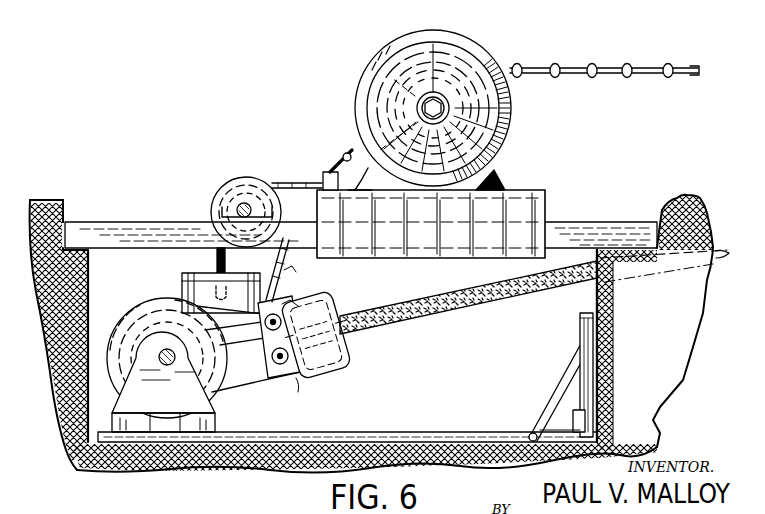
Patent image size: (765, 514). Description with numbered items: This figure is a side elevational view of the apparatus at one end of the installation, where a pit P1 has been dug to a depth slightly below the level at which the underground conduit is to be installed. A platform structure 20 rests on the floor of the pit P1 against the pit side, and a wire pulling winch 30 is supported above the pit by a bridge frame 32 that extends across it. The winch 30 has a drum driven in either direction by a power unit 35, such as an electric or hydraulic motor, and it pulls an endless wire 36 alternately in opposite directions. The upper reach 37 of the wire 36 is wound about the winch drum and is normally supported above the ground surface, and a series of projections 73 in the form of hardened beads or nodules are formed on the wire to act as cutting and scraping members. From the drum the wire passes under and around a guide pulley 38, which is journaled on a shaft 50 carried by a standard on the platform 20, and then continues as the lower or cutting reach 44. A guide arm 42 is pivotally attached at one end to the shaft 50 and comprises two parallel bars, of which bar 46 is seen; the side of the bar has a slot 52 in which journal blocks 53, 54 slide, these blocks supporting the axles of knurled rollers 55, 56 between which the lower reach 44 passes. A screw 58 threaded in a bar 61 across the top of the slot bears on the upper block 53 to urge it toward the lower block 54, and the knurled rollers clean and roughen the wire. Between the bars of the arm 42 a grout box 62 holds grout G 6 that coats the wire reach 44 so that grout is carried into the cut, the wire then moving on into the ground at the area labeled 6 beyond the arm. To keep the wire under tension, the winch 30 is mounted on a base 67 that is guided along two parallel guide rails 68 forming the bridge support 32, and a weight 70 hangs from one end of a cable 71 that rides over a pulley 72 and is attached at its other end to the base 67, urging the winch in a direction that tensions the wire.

The ground surface 6 is at (475, 302).
The platform structure 20 is at (386, 431).
The wire pulling winch 30 is at (419, 110).
The bridge frame 32 is at (100, 208).
The power unit 35 is at (470, 50).
The endless wire 36 is at (605, 71).
The upper reach 37 is at (698, 66).
The guide pulley 38 is at (138, 312).
The guide arm 42 is at (333, 299).
The lower or cutting reach 44 is at (528, 290).
The bar 46 is at (228, 388).
The shaft 50 is at (159, 365).
The slot 52 is at (306, 386).
The upper journal block 53 is at (290, 300).
The lower journal block 54 is at (276, 367).
The knurled roller 55 is at (284, 320).
The knurled roller 56 is at (268, 356).
The screw 58 is at (283, 275).
The bar 61 is at (284, 276).
The grout box 62 is at (334, 308).
The base 67 is at (547, 213).
The guide rail 68 is at (152, 222).
The weight 70 is at (211, 274).
The cable 71 is at (302, 184).
The pulley 72 is at (226, 188).
The projections 73 is at (633, 58).
The pit P1 is at (498, 367).